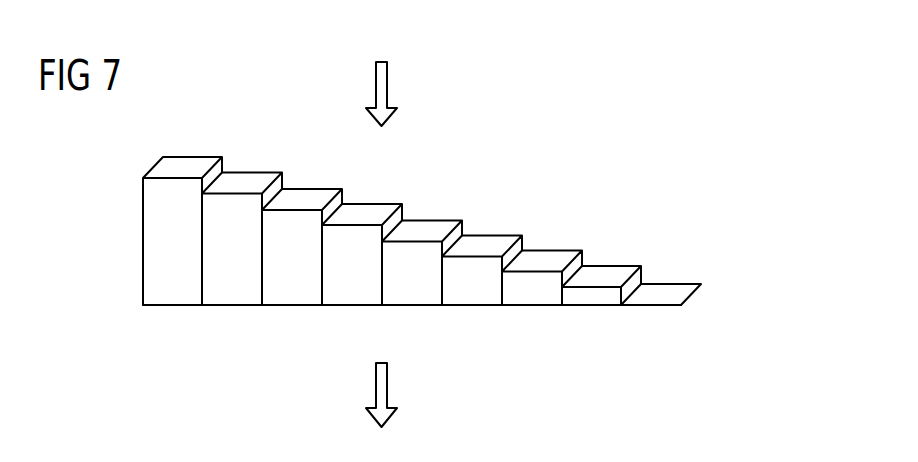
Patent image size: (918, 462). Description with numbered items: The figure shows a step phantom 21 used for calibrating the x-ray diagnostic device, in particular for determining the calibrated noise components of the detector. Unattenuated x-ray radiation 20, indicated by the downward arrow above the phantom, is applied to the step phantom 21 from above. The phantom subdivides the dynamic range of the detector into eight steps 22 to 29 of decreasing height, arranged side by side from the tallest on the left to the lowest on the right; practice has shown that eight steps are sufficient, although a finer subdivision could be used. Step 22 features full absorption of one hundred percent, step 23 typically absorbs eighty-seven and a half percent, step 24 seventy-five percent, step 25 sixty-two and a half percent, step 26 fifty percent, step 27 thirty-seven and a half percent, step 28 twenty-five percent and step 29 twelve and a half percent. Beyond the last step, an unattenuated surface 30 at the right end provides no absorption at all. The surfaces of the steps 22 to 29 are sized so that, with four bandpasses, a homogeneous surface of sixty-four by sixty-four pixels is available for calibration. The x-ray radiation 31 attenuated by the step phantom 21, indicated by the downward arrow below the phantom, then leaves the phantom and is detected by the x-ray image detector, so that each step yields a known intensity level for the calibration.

The unattenuated x-ray radiation 20 is at (382, 85).
The step phantom 21 is at (127, 232).
The step 22 is at (184, 167).
The step 23 is at (235, 295).
The step 24 is at (307, 197).
The step 25 is at (353, 295).
The step 26 is at (425, 230).
The step 27 is at (473, 295).
The step 28 is at (548, 260).
The step 29 is at (592, 295).
The unattenuated surface 30 is at (665, 293).
The attenuated x-ray radiation 31 is at (382, 383).